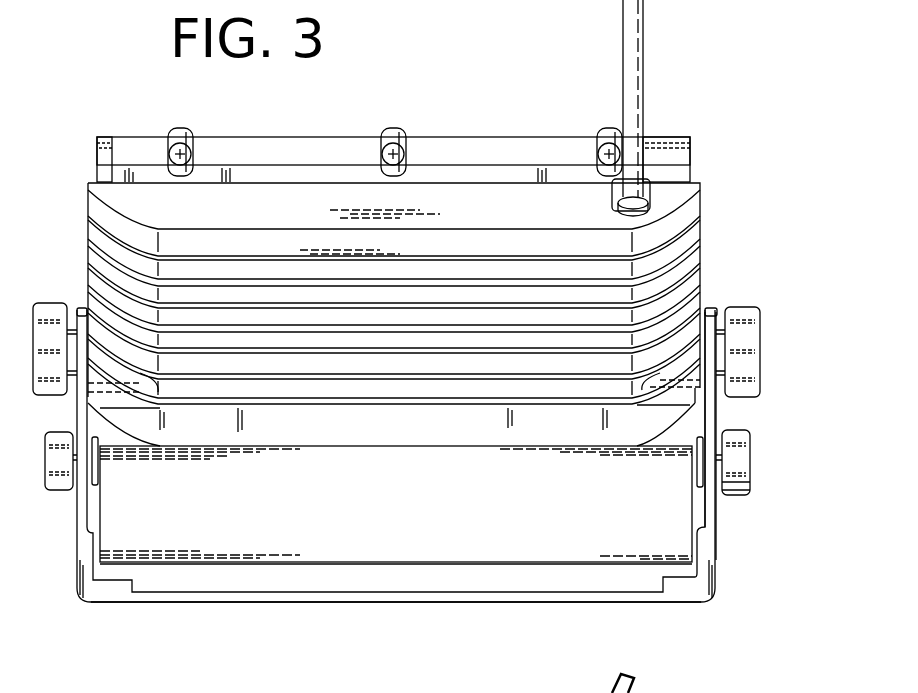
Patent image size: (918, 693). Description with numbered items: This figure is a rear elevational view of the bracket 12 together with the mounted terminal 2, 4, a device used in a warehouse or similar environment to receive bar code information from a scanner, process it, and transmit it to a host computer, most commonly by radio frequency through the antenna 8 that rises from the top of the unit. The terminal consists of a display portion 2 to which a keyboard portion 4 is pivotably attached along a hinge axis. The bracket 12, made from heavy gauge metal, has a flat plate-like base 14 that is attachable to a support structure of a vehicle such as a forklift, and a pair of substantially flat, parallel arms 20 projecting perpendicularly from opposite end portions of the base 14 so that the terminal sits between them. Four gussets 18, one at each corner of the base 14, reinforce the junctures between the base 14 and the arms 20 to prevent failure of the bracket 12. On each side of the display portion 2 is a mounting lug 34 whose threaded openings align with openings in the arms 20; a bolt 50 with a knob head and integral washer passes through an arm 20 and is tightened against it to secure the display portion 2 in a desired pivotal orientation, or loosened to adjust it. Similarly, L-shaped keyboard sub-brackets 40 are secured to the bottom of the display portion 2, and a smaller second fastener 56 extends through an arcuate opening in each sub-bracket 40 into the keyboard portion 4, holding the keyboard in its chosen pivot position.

The display portion 2 is at (690, 204).
The keyboard portion 4 is at (420, 529).
The antenna 8 is at (640, 40).
The bracket 12 is at (85, 606).
The base 14 is at (437, 603).
The gusset 18 is at (88, 542).
The arm 20 is at (716, 415).
The mounting lug 34 is at (100, 372).
The keyboard sub-bracket 40 is at (703, 452).
The bolt 50 is at (760, 337).
The keyboard second fastener 56 is at (752, 485).